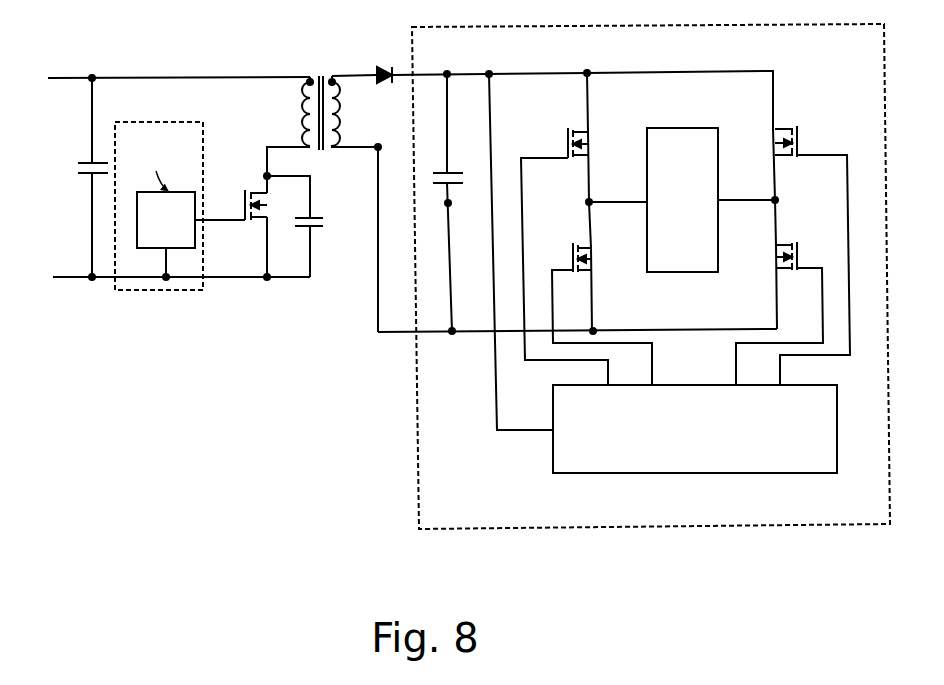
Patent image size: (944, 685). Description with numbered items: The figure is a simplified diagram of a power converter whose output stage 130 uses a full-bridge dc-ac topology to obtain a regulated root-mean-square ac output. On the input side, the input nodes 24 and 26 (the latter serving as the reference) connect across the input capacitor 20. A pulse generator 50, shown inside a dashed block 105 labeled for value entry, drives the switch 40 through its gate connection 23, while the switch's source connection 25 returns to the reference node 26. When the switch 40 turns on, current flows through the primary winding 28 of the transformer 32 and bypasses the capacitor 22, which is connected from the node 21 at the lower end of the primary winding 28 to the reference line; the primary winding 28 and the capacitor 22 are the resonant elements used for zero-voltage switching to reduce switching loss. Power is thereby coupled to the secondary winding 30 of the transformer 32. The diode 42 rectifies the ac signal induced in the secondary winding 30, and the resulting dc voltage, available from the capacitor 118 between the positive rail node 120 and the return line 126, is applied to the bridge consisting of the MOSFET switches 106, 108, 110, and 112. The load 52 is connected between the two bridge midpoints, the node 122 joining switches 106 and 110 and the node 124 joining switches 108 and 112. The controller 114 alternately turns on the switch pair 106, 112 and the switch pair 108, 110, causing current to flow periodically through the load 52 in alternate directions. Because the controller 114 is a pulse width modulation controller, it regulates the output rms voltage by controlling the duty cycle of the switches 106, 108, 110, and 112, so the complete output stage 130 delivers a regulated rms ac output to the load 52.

The input capacitor 20 is at (78, 170).
The node 21 is at (275, 173).
The capacitor 22 is at (325, 223).
The gate connection 23 is at (223, 227).
The input node 24 is at (92, 76).
The source connection 25 is at (271, 237).
The input node 26 is at (92, 277).
The primary winding 28 is at (307, 112).
The secondary winding 30 is at (336, 112).
The transformer 32 is at (320, 72).
The switch 40 is at (246, 198).
The diode 42 is at (380, 70).
The pulse generator 50 is at (166, 234).
The load 52 is at (682, 200).
The value entry unit 105 is at (197, 292).
The MOSFET switch 106 is at (565, 148).
The MOSFET switch 108 is at (800, 145).
The MOSFET switch 110 is at (570, 258).
The MOSFET switch 112 is at (800, 260).
The controller 114 is at (661, 272).
The capacitor 118 is at (437, 185).
The positive supply node 120 is at (590, 72).
The bridge output node 122 is at (592, 200).
The bridge output node 124 is at (772, 198).
The ground node 126 is at (597, 328).
The output stage 130 is at (575, 529).